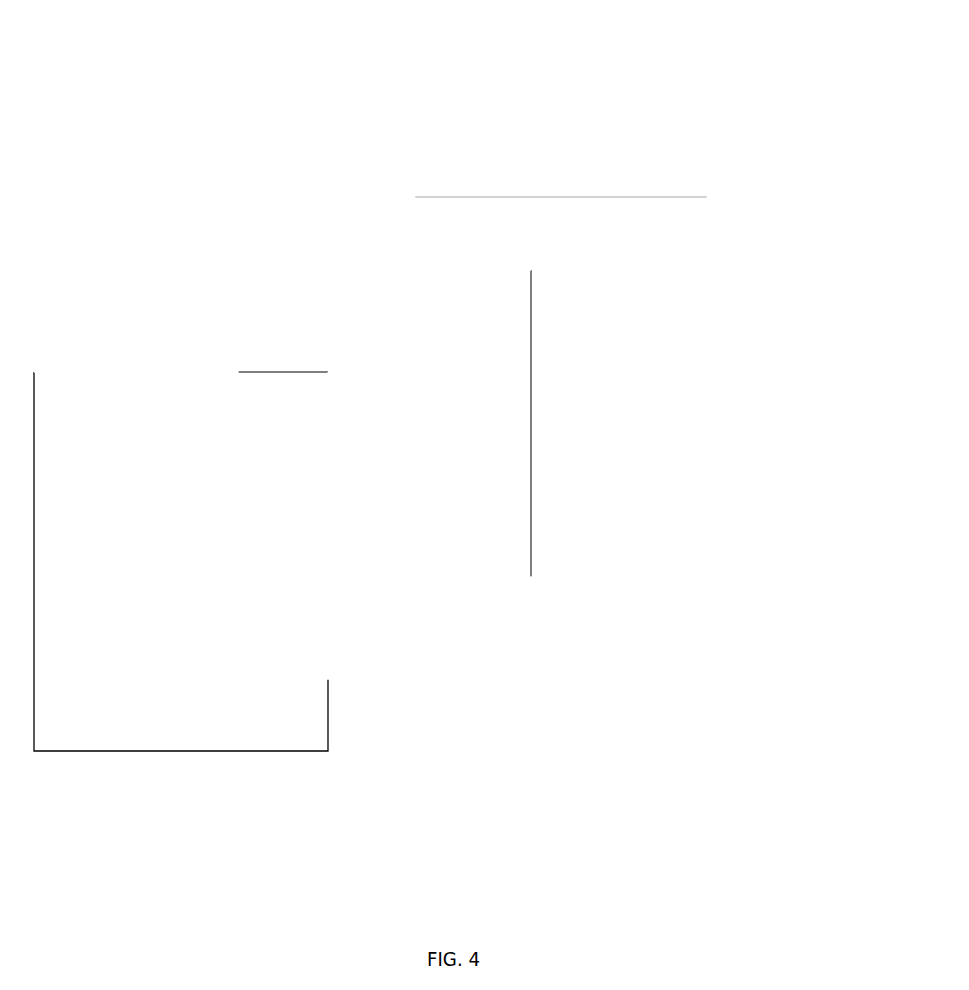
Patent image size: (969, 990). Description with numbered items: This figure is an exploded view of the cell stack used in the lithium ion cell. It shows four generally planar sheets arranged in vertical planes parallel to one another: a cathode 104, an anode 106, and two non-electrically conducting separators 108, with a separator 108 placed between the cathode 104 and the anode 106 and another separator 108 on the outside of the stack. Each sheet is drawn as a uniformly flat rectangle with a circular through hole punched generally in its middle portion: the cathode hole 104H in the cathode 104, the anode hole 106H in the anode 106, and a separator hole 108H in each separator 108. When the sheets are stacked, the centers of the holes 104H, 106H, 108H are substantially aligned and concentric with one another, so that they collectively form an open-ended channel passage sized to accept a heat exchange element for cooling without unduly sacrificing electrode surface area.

The cathode 104 is at (93, 372).
The anode 106 is at (473, 197).
The separator 108 is at (327, 270).
The cathode hole 104H is at (182, 533).
The anode hole 106H is at (563, 358).
The separator hole 108H is at (386, 447).